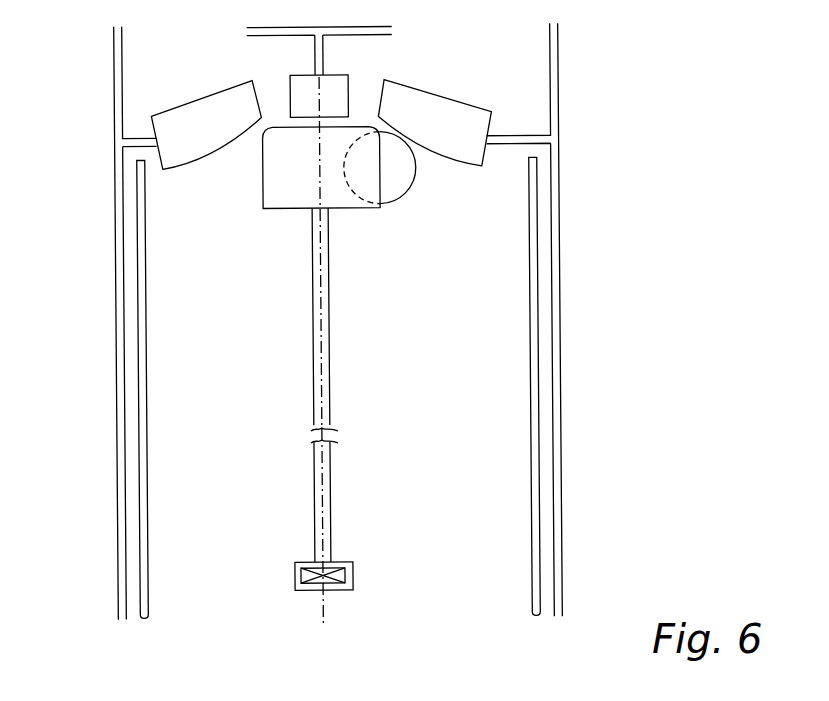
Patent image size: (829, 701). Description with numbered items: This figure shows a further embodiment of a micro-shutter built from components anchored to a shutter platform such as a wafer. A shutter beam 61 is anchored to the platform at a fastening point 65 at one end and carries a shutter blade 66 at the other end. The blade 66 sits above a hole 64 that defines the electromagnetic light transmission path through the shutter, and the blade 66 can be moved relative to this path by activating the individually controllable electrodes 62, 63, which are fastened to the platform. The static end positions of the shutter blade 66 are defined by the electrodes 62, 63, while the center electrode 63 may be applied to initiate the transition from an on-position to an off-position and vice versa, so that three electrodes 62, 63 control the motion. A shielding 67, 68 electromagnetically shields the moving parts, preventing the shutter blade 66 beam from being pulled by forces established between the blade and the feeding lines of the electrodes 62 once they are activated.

The shutter beam 61 is at (313, 342).
The electrodes 62 is at (179, 107).
The center electrode 63 is at (350, 80).
The hole 64 is at (393, 200).
The fastening point 65 is at (352, 575).
The shutter blade 66 is at (264, 180).
The shielding 67 is at (146, 310).
The shielding 68 is at (530, 388).